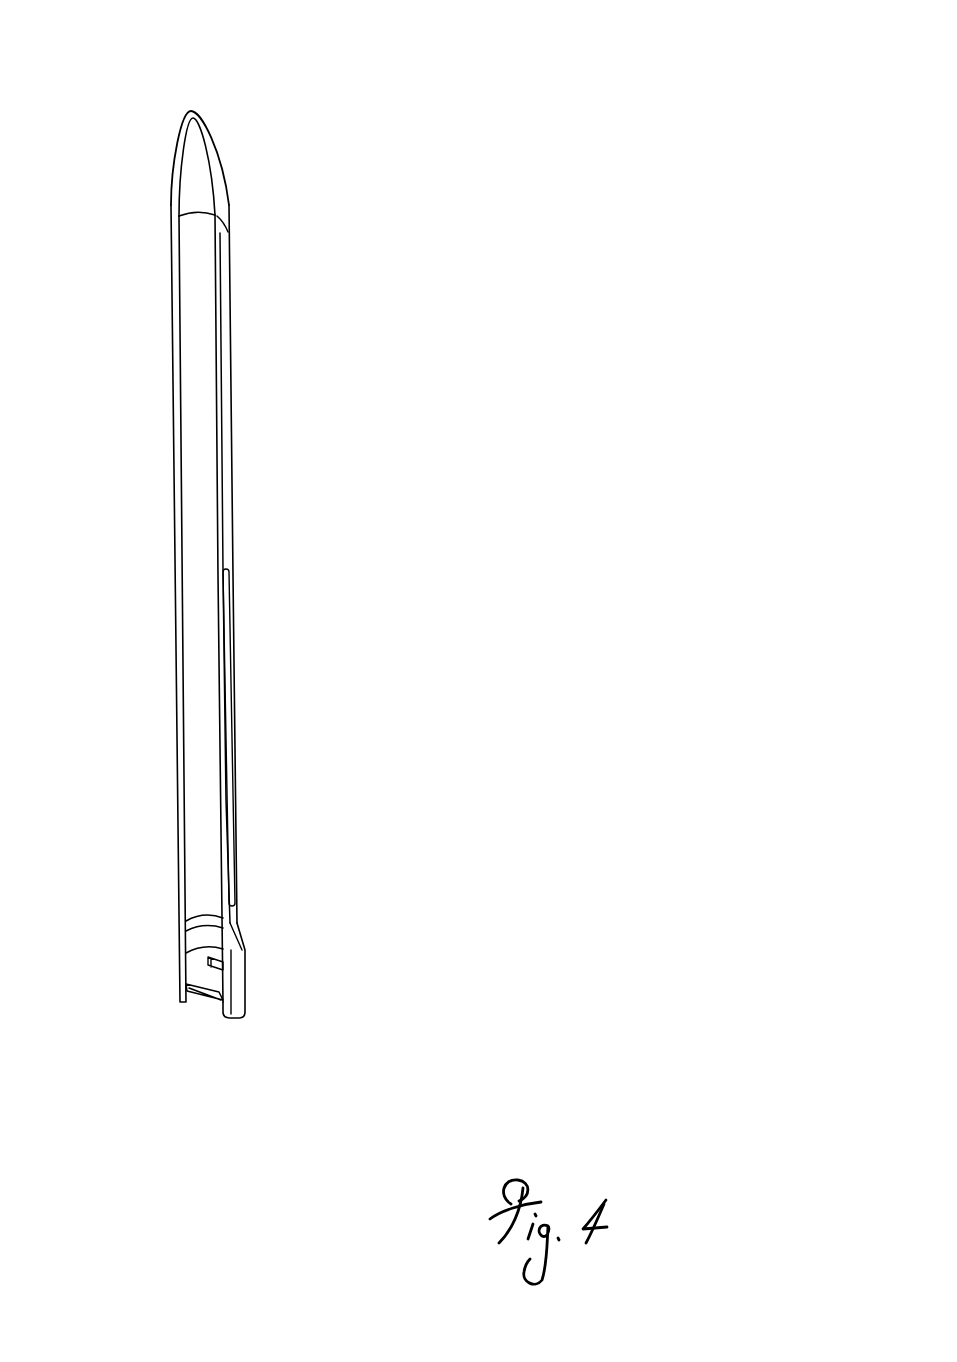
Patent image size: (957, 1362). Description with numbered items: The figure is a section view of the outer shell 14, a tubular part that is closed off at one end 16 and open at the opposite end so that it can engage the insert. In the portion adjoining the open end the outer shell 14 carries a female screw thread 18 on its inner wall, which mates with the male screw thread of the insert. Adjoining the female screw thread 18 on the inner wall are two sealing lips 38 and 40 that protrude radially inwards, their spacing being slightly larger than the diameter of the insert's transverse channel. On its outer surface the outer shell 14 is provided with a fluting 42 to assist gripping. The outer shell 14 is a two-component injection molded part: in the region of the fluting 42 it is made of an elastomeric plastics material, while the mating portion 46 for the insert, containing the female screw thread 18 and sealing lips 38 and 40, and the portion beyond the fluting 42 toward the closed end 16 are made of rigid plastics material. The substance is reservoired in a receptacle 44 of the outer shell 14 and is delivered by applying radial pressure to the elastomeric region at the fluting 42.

The outer shell 14 is at (487, 81).
The closed end 16 is at (216, 140).
The receptacle 44 is at (191, 323).
The fluting 42 is at (236, 782).
The sealing lip 40 is at (197, 918).
The sealing lip 38 is at (190, 958).
The mating portion 46 is at (243, 985).
The female screw thread 18 is at (199, 1000).